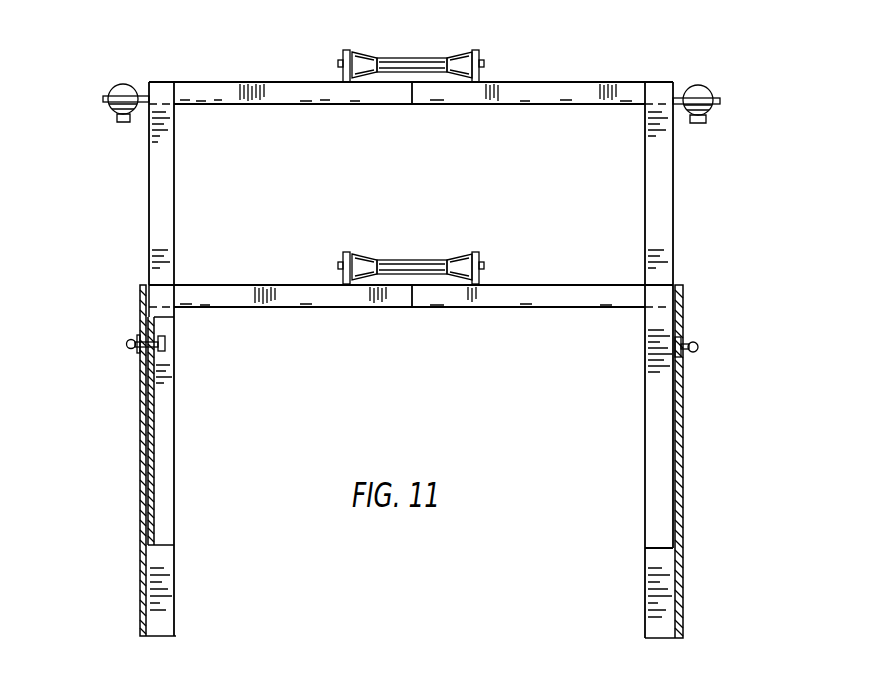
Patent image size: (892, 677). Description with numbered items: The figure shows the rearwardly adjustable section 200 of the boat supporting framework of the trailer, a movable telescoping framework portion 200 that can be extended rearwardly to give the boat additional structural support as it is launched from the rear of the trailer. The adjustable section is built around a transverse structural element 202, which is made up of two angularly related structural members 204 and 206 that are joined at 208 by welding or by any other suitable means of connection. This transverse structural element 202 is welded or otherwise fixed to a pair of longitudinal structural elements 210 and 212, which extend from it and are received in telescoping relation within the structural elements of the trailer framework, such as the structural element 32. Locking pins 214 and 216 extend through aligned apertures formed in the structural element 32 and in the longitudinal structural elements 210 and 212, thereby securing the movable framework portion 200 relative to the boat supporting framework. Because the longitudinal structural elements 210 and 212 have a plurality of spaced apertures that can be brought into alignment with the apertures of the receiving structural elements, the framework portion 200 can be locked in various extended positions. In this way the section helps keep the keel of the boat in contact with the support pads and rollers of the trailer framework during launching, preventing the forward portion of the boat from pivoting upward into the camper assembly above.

The rearwardly adjustable section 200 is at (593, 80).
The transverse structural element 202 is at (253, 82).
The structural member 204 is at (298, 104).
The structural member 206 is at (493, 104).
The joint 208 is at (412, 104).
The longitudinal structural element 210 is at (658, 208).
The longitudinal structural element 212 is at (148, 190).
The locking pin 214 is at (697, 342).
The locking pin 216 is at (127, 345).
The structural element 32 is at (138, 447).